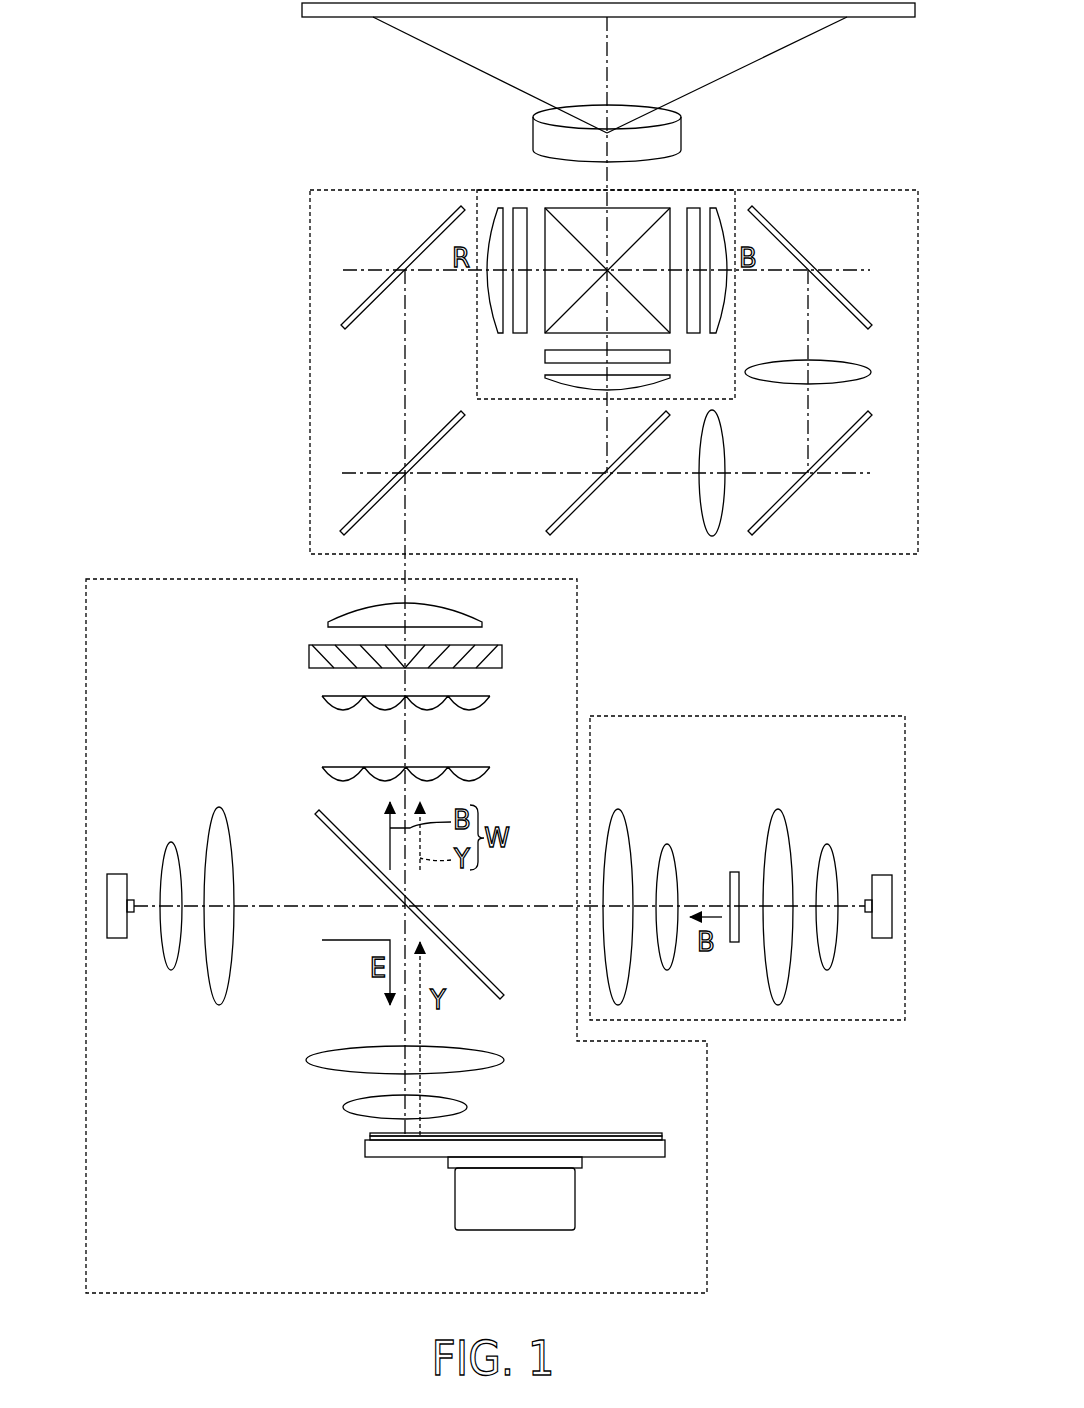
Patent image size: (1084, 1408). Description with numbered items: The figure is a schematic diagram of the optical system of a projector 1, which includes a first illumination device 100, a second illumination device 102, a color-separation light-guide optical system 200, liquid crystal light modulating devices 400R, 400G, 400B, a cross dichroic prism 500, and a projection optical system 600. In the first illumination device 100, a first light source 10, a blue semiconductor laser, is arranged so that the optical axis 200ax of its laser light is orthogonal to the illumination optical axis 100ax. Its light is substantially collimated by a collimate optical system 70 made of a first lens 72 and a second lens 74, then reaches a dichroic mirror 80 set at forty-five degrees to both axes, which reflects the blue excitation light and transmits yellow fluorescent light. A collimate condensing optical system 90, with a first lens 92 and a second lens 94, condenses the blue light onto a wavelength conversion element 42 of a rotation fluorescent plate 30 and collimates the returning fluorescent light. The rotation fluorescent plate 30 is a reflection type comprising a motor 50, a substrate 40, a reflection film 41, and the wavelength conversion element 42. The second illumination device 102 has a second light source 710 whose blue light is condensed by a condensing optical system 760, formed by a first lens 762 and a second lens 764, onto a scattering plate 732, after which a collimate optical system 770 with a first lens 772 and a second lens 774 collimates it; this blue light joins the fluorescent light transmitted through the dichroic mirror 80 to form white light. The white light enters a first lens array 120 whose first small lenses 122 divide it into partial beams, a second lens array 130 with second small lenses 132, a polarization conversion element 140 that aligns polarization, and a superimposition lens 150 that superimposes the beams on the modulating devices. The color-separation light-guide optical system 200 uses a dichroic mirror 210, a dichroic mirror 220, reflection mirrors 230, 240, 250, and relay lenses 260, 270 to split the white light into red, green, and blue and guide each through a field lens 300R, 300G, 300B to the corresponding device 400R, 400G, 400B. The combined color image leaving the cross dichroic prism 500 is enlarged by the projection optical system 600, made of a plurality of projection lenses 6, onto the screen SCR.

The projector 1 is at (263, 105).
The projection lens 6 is at (590, 112).
The screen SCR is at (884, 20).
The projection optical system 600 is at (533, 132).
The cross dichroic prism 500 is at (662, 208).
The liquid crystal light modulating device 400R is at (518, 206).
The liquid crystal light modulating device 400G is at (545, 358).
The liquid crystal light modulating device 400B is at (695, 206).
The field lens 300R is at (495, 205).
The field lens 300G is at (548, 380).
The field lens 300B is at (718, 208).
The color-separation light-guide optical system 200 is at (862, 555).
The dichroic mirror 210 is at (368, 504).
The dichroic mirror 220 is at (586, 500).
The reflection mirror 230 is at (345, 320).
The reflection mirror 240 is at (838, 457).
The reflection mirror 250 is at (865, 320).
The relay lens 260 is at (700, 490).
The relay lens 270 is at (836, 360).
The first illumination device 100 is at (707, 1212).
The illumination optical axis 100ax is at (405, 572).
The superimposition lens 150 is at (470, 613).
The polarization conversion element 140 is at (487, 643).
The second lens array 130 is at (490, 705).
The second small lens 132 is at (328, 709).
The first lens array 120 is at (490, 776).
The first small lens 122 is at (328, 779).
The first light source 10 is at (138, 866).
The collimate optical system 70 is at (196, 852).
The first lens 72 is at (178, 845).
The second lens 74 is at (217, 872).
The dichroic mirror 80 is at (485, 972).
The optical axis 200ax is at (288, 909).
The collimate condensing optical system 90 is at (353, 1090).
The first lens 92 is at (355, 1115).
The second lens 94 is at (315, 1065).
The rotation fluorescent plate 30 is at (560, 1160).
The substrate 40 is at (665, 1152).
The reflection film 41 is at (665, 1138).
The wavelength conversion element 42 is at (662, 1135).
The motor 50 is at (562, 1207).
The second illumination device 102 is at (860, 1022).
The second light source 710 is at (856, 880).
The condensing optical system 760 is at (818, 866).
The first lens 762 is at (844, 870).
The second lens 764 is at (788, 820).
The scattering plate 732 is at (734, 870).
The collimate optical system 770 is at (657, 866).
The first lens 772 is at (683, 870).
The second lens 774 is at (628, 820).